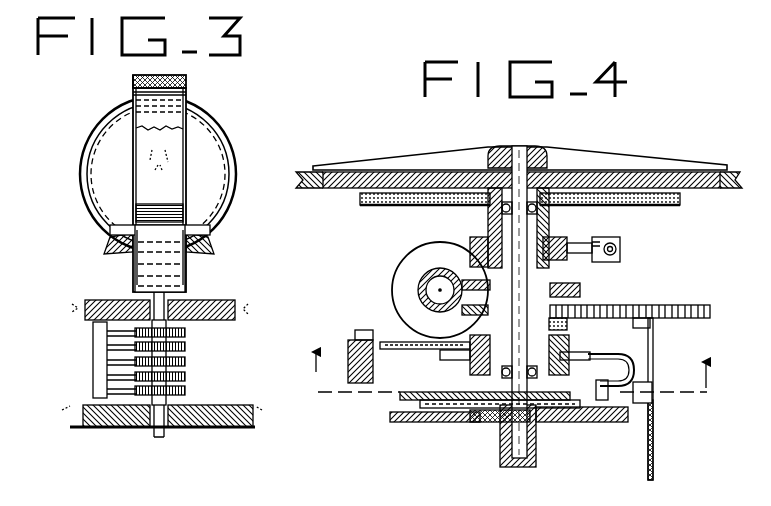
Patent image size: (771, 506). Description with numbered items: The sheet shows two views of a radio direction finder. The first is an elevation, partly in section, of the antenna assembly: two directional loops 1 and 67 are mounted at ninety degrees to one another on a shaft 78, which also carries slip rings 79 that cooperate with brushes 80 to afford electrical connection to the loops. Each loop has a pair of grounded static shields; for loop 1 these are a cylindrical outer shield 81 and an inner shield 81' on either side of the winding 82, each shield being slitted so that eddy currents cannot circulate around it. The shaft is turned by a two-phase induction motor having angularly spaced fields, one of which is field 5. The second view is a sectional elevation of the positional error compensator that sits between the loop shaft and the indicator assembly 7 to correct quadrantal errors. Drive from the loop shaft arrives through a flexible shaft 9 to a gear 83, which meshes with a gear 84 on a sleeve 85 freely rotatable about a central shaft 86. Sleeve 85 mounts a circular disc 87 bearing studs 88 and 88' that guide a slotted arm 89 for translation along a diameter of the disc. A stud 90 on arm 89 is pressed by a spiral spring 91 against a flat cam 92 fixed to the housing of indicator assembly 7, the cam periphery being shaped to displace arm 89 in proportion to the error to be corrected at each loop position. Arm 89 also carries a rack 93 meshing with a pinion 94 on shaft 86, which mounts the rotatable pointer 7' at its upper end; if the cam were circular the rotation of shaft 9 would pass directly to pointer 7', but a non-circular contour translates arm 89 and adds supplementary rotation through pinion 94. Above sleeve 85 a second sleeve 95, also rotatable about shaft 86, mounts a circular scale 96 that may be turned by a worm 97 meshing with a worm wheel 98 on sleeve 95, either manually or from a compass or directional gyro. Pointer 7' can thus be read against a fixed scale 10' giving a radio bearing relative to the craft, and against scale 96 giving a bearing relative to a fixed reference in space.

In FIG. 3, the directional antenna or loop 1 is at (187, 160).
In FIG. 3, the loop 67 is at (232, 126).
In FIG. 3, the shaft 78 is at (164, 440).
In FIG. 3, the slip rings 79 is at (187, 362).
In FIG. 3, the brushes 80 is at (120, 364).
In FIG. 3, the cylindrical shield 81 is at (183, 73).
In FIG. 3, the cylindrical shield 81' is at (186, 94).
In FIG. 3, the winding 82 is at (132, 80).
In FIG. 4, the field 5 is at (510, 360).
In FIG. 4, the indicator assembly 7 is at (527, 310).
In FIG. 4, the rotatable pointer 7' is at (520, 142).
In FIG. 4, the flexible shaft 9 is at (655, 445).
In FIG. 4, the fixed scale 10' is at (512, 209).
In FIG. 4, the gear 83 is at (672, 305).
In FIG. 4, the gear 84 is at (572, 298).
In FIG. 4, the sleeve 85 is at (560, 330).
In FIG. 4, the shaft 86 is at (552, 232).
In FIG. 4, the circular disc 87 is at (430, 355).
In FIG. 4, the stud 88 is at (502, 362).
In FIG. 4, the stud 88' is at (606, 377).
In FIG. 4, the slotted arm 89 is at (628, 350).
In FIG. 4, the stud 90 is at (590, 422).
In FIG. 4, the spiral spring 91 is at (450, 412).
In FIG. 4, the flat cam 92 is at (410, 423).
In FIG. 4, the rack 93 is at (430, 390).
In FIG. 4, the pinion 94 is at (468, 423).
In FIG. 4, the second sleeve 95 is at (470, 245).
In FIG. 4, the circular scale 96 is at (372, 207).
In FIG. 4, the worm 97 is at (392, 292).
In FIG. 4, the worm wheel 98 is at (585, 280).